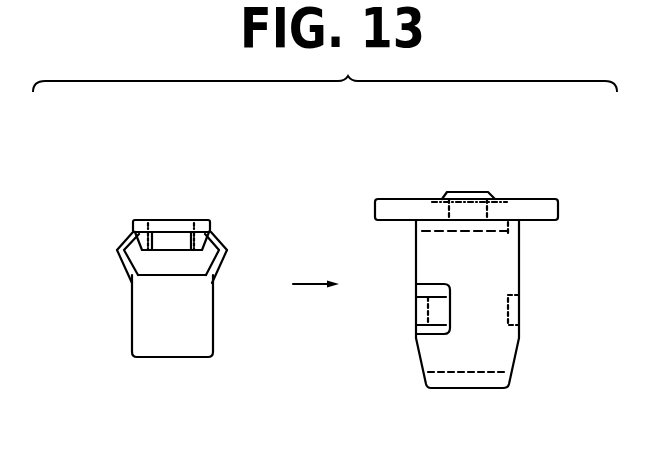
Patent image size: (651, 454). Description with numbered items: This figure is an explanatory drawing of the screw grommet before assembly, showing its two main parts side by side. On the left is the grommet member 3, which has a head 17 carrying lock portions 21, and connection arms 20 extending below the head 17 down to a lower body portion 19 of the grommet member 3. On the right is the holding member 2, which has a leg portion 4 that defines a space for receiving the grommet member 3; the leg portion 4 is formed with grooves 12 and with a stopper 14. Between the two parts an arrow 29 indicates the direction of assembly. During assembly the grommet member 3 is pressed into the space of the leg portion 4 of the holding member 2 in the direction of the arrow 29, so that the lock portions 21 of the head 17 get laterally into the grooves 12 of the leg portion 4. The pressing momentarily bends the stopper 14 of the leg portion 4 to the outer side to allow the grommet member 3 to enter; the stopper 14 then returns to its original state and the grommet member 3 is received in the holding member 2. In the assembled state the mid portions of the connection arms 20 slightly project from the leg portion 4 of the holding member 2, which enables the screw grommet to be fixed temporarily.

The holding member 2 is at (550, 183).
The grommet member 3 is at (202, 198).
The leg portion 4 is at (507, 276).
The grooves 12 is at (478, 226).
The stopper 14 is at (420, 315).
The head 17 is at (143, 220).
The shank 19 is at (207, 326).
The connection arms 20 is at (124, 259).
The lock portions 21 is at (204, 221).
The arrow 29 is at (308, 284).